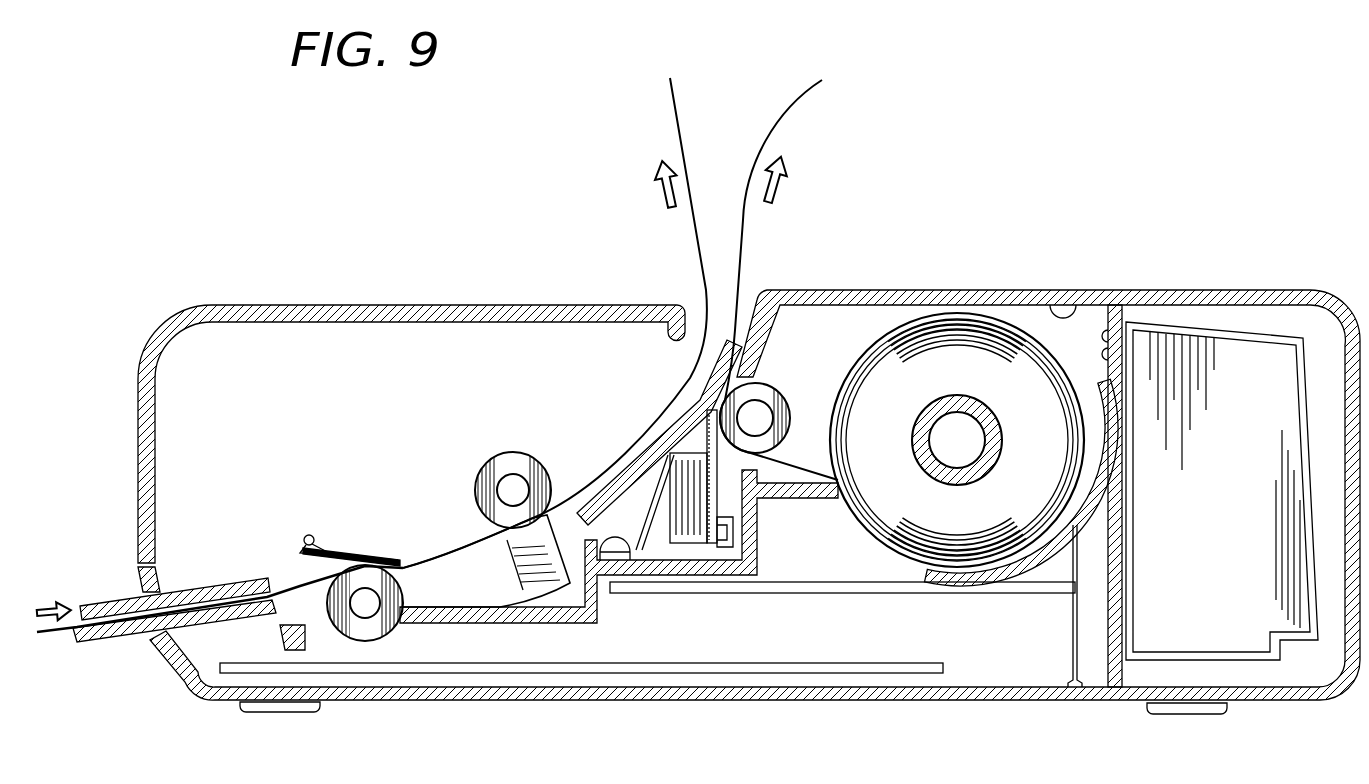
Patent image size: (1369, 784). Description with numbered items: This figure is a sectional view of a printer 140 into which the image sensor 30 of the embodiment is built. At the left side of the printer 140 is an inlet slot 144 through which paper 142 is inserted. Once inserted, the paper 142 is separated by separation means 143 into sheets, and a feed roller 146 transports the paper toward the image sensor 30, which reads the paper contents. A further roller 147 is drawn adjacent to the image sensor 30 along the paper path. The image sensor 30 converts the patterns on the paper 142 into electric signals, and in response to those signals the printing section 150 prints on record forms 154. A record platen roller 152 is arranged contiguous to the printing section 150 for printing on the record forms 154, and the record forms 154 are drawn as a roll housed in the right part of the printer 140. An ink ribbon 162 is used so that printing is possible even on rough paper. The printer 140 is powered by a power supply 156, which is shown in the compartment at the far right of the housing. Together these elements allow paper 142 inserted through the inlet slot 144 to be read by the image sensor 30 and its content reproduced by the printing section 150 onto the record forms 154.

The printer 140 is at (1312, 771).
The paper 142 is at (673, 120).
The inlet slot 144 is at (118, 633).
The separation means 143 is at (360, 566).
The feed roller 146 is at (380, 627).
The pressure roller 147 is at (516, 455).
The image sensor 30 is at (520, 566).
The printing section 150 is at (675, 522).
The record platen roller 152 is at (760, 390).
The record forms 154 is at (790, 118).
The power supply 156 is at (1240, 345).
The ink ribbon 162 is at (690, 387).